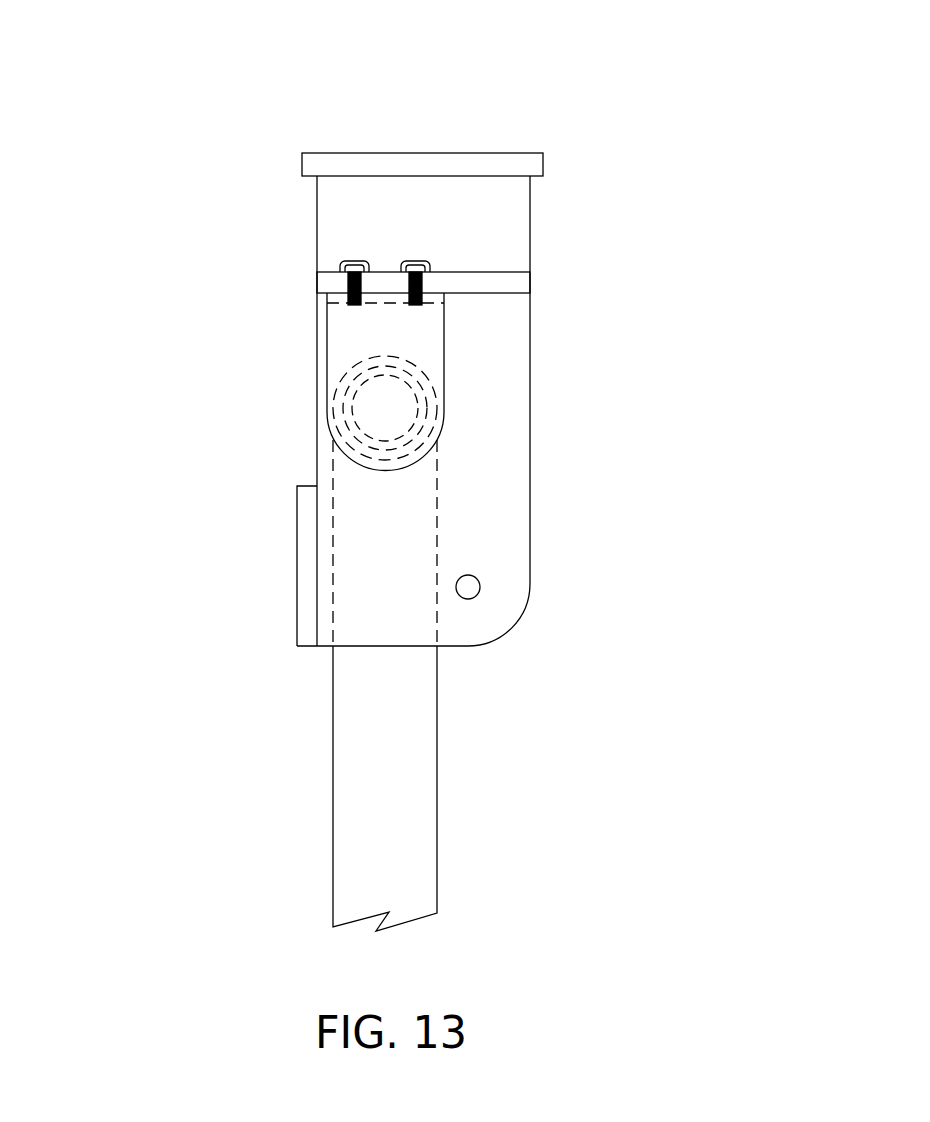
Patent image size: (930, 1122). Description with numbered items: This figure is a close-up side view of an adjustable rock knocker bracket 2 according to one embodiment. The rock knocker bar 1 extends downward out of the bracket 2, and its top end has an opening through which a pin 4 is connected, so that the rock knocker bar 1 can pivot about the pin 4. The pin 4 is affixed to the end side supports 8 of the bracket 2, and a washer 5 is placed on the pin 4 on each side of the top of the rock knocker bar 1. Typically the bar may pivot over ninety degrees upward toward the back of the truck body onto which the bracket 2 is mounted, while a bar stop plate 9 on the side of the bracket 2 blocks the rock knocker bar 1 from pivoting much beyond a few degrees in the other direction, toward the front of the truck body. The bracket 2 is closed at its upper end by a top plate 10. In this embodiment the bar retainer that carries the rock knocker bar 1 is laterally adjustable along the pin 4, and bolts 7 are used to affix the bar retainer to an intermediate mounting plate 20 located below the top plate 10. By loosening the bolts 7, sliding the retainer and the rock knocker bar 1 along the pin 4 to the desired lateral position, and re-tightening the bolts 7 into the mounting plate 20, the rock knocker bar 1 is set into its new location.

The rock knocker bar 1 is at (377, 805).
The rock knocker bracket 2 is at (350, 138).
The pin 4 is at (378, 428).
The washer 5 is at (422, 382).
The bolts 7 is at (357, 260).
The end side supports 8 is at (480, 527).
The bar stop plate 9 is at (305, 558).
The top plate 10 is at (500, 160).
The intermediate mounting plate 20 is at (503, 283).